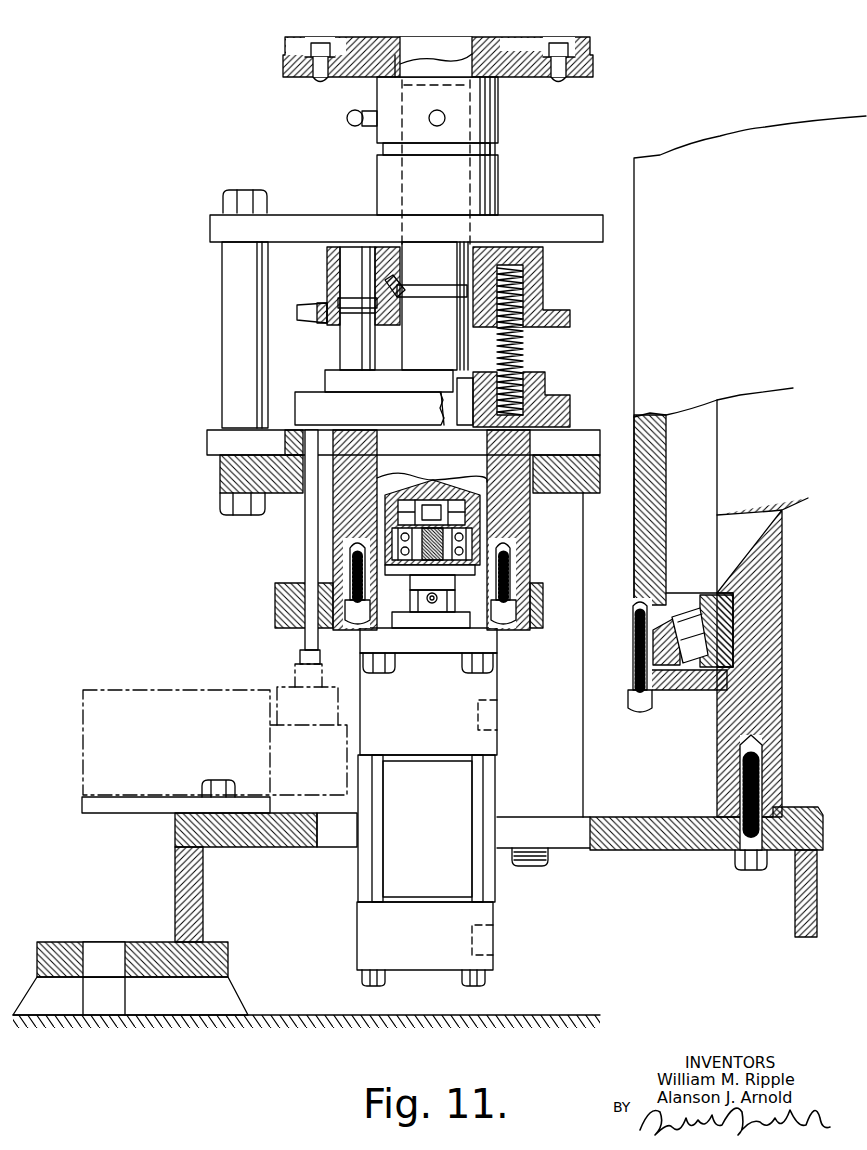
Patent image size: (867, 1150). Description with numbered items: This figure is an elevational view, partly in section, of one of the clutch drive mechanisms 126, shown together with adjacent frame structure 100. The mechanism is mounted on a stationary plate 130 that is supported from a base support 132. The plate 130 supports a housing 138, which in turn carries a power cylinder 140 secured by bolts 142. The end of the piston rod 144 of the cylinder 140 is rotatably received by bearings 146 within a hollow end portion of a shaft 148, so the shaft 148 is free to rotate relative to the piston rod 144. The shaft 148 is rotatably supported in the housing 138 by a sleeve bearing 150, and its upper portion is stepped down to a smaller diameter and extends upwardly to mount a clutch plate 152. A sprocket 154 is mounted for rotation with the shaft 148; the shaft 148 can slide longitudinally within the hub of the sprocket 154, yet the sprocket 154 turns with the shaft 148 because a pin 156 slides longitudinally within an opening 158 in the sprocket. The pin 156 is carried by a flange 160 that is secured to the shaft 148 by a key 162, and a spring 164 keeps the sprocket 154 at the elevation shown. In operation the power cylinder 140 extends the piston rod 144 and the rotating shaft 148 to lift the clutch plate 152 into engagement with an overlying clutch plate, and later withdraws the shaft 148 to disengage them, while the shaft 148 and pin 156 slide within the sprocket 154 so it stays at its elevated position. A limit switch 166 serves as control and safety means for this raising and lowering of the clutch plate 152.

The frame 100 is at (733, 716).
The clutch drive mechanism 126 is at (198, 288).
The stationary plate 130 is at (220, 474).
The base support 132 is at (175, 889).
The housing 138 is at (333, 537).
The power cylinder 140 is at (496, 792).
The bolts 142 is at (500, 624).
The piston rod 144 is at (410, 582).
The bearings 146 is at (480, 530).
The shaft 148 is at (400, 334).
The sleeve bearing 150 is at (380, 477).
The clutch plate 152 is at (578, 44).
The sprocket 154 is at (538, 293).
The pin 156 is at (340, 348).
The opening 158 is at (352, 246).
The flange 160 is at (326, 378).
The key 162 is at (460, 378).
The spring 164 is at (523, 359).
The limit switch 166 is at (213, 689).